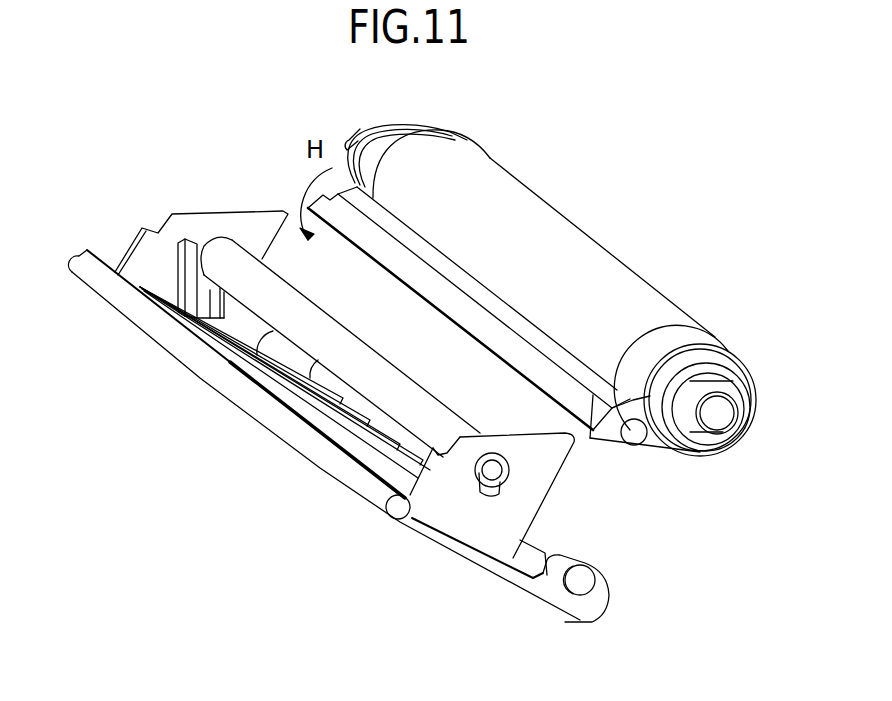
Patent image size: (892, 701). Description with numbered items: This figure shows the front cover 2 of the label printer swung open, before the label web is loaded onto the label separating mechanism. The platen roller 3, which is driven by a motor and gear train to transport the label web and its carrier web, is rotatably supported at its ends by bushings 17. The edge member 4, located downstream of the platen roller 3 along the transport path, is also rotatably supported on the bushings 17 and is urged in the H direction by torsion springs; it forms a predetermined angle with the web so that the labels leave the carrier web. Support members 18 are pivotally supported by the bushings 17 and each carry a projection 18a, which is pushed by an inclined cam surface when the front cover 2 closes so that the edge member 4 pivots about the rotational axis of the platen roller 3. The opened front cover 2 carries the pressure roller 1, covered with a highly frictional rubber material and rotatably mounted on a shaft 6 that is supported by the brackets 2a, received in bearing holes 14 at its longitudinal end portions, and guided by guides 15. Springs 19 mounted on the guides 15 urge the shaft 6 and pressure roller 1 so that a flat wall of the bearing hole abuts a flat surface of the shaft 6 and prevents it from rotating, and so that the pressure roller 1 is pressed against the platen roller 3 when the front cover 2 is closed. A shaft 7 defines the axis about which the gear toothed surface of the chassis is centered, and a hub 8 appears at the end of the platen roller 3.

The pressure roller 1 is at (222, 254).
The front cover 2 is at (280, 428).
The brackets 2a is at (254, 210).
The platen roller 3 is at (483, 182).
The edge member 4 is at (452, 322).
The shaft 6 is at (500, 478).
The shaft 7 is at (590, 580).
The hub 8 is at (730, 417).
The bearing holes 14 is at (495, 490).
The guides 15 is at (190, 283).
The bushings 17 is at (383, 125).
The support members 18 is at (667, 437).
The projection 18a is at (633, 445).
The springs 19 is at (213, 310).